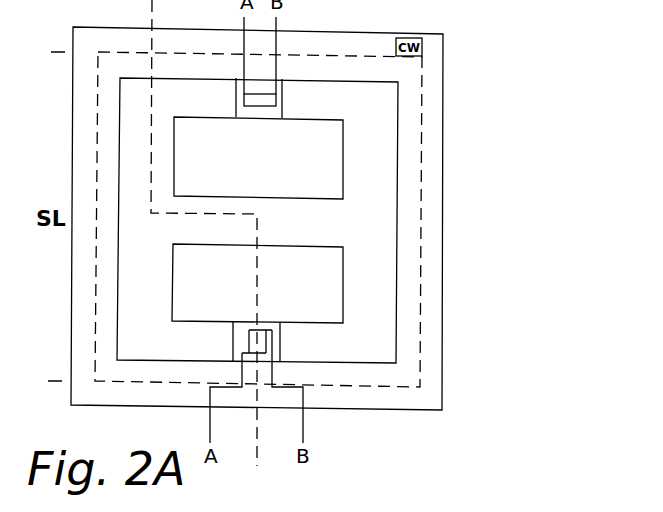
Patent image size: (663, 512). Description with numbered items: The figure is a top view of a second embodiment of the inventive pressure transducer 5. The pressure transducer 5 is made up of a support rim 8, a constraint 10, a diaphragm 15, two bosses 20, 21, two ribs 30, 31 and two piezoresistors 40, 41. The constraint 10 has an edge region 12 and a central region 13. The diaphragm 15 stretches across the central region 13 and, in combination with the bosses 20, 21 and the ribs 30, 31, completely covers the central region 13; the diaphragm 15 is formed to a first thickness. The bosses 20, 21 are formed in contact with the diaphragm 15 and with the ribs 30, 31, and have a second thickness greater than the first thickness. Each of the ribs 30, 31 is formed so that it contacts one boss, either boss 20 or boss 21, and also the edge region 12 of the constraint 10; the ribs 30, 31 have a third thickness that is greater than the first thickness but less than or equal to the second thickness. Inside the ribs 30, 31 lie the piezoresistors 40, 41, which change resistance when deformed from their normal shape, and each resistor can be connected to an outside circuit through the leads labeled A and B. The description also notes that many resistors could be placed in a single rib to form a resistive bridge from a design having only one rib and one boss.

The pressure transducer 5 is at (548, 62).
The support rim 8 is at (429, 245).
The constraint 10 is at (405, 330).
The edge region 12 is at (118, 316).
The central region 13 is at (157, 315).
The diaphragm 15 is at (360, 137).
The boss 20 is at (343, 172).
The boss 21 is at (343, 285).
The rib 30 is at (283, 111).
The rib 31 is at (281, 331).
The piezoresistor 40 is at (236, 100).
The piezoresistor 41 is at (246, 335).